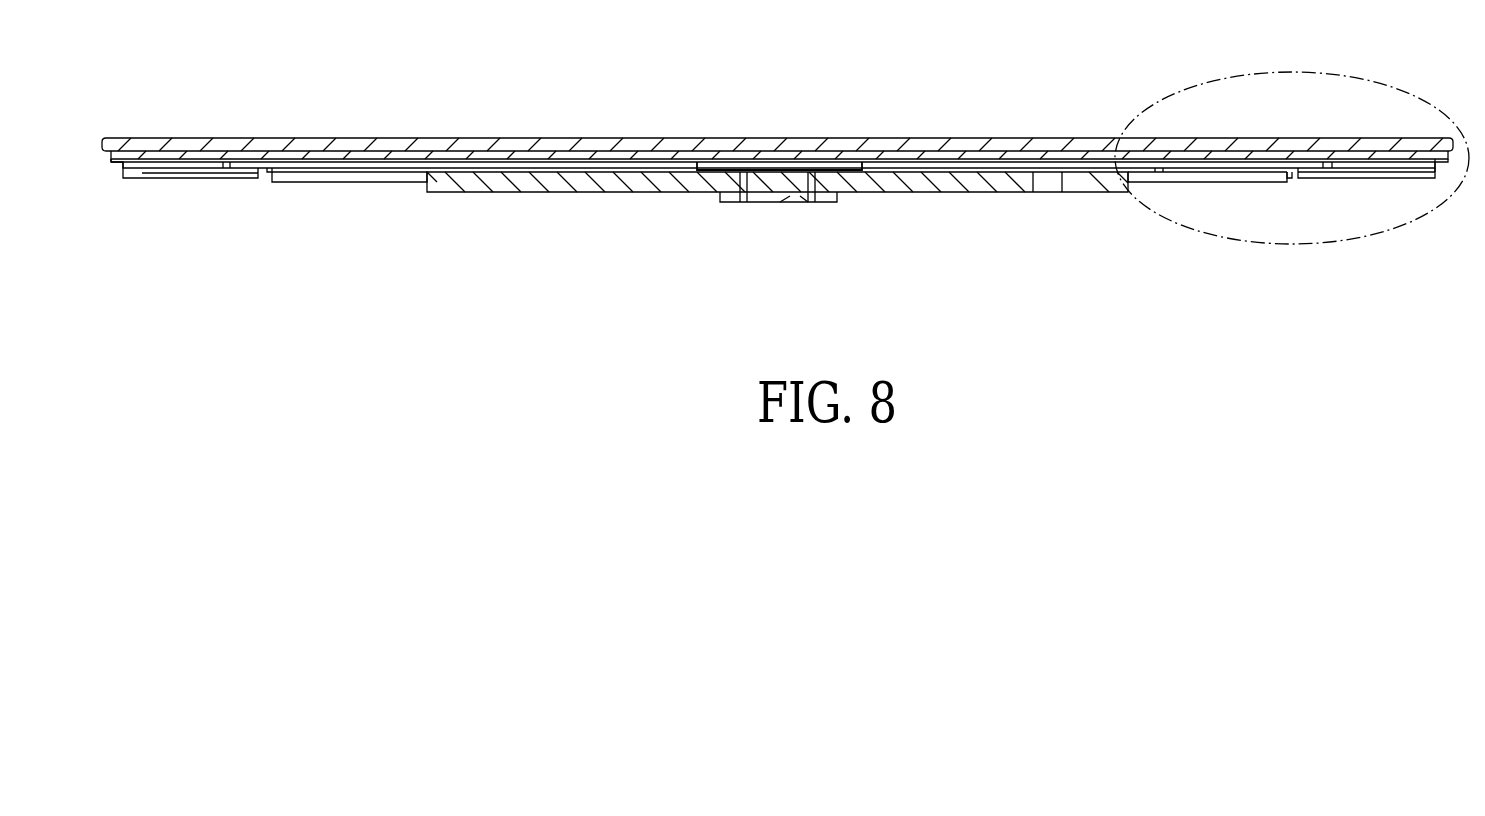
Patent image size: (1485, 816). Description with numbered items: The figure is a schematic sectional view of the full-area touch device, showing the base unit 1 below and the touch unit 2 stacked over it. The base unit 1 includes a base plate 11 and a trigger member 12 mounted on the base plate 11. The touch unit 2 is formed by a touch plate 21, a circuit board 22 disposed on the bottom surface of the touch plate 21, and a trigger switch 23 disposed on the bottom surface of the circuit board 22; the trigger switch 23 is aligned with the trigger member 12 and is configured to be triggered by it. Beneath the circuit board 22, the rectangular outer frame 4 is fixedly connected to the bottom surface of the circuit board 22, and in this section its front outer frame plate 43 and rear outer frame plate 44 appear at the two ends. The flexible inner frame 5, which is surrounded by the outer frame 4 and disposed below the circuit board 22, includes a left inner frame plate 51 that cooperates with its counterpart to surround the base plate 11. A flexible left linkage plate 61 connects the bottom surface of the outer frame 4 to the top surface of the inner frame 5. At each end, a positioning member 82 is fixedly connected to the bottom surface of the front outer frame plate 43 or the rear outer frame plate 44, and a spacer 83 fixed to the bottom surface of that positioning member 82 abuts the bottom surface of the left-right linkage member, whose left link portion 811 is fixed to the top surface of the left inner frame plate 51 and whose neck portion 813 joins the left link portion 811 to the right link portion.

The base unit 1 is at (1093, 194).
The base plate 11 is at (938, 184).
The trigger member 12 is at (792, 178).
The touch unit 2 is at (675, 140).
The touch plate 21 is at (915, 147).
The circuit board 22 is at (1045, 158).
The trigger switch 23 is at (782, 162).
The outer frame 4 is at (1438, 166).
The front outer frame plate 43 is at (125, 168).
The rear outer frame plate 44 is at (1412, 178).
The inner frame 5 is at (391, 179).
The left inner frame plate 51 is at (1197, 178).
The left linkage plate 61 is at (318, 165).
The left link portion 811 is at (268, 173).
The neck portion 813 is at (343, 176).
The positioning member 82 is at (161, 174).
The spacer 83 is at (194, 173).